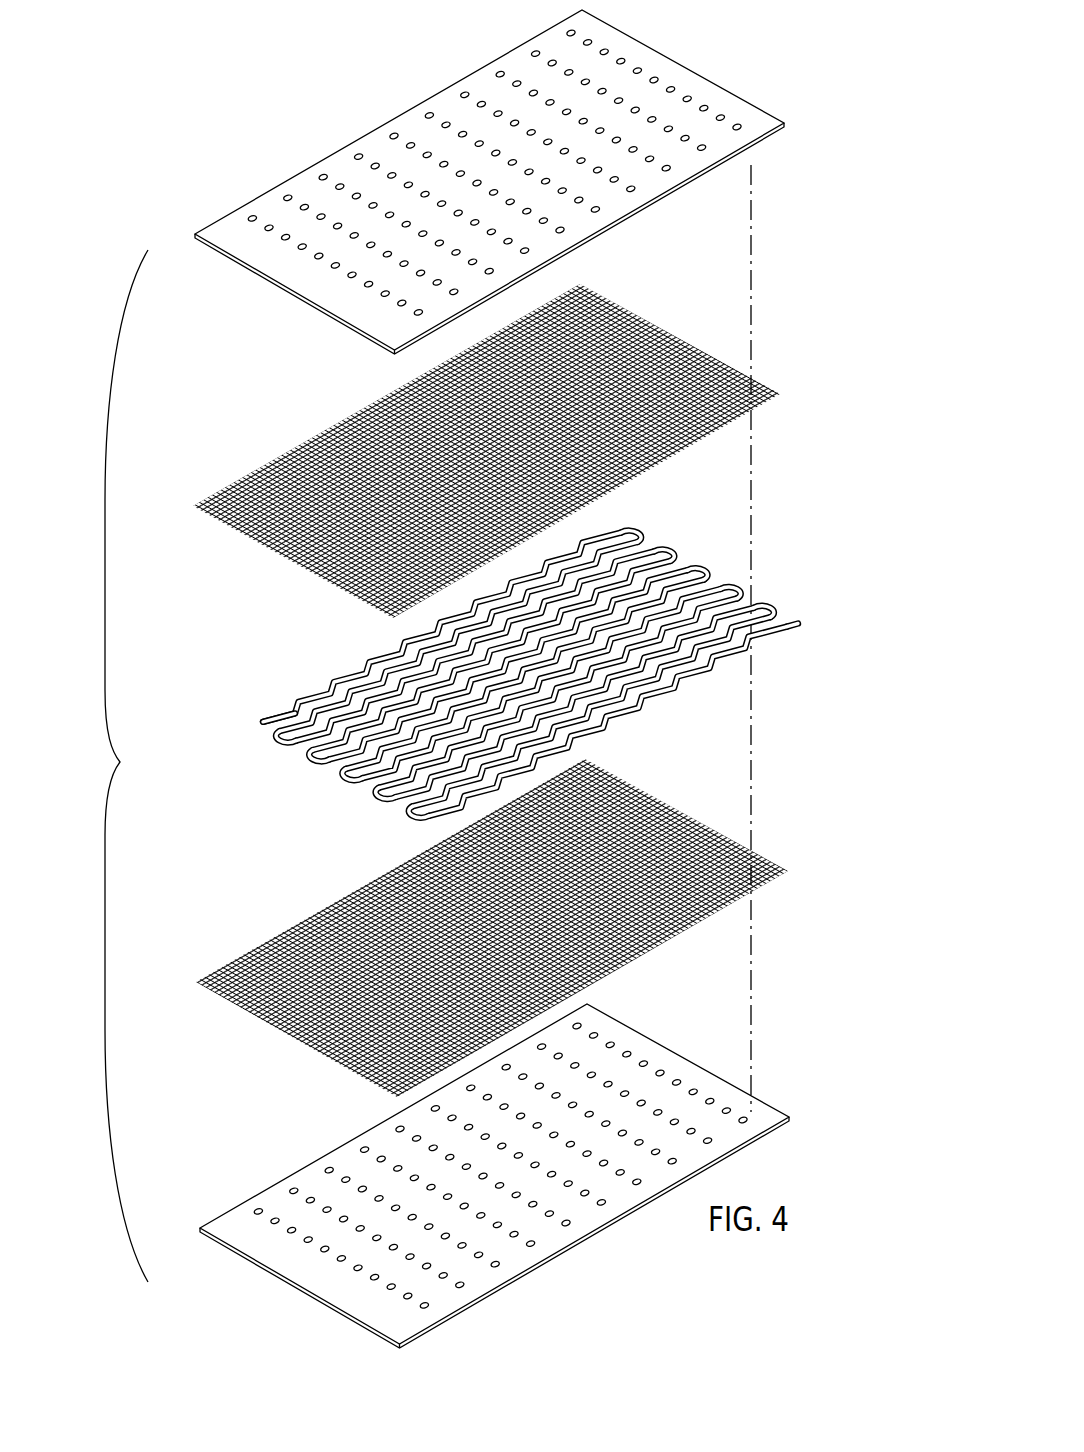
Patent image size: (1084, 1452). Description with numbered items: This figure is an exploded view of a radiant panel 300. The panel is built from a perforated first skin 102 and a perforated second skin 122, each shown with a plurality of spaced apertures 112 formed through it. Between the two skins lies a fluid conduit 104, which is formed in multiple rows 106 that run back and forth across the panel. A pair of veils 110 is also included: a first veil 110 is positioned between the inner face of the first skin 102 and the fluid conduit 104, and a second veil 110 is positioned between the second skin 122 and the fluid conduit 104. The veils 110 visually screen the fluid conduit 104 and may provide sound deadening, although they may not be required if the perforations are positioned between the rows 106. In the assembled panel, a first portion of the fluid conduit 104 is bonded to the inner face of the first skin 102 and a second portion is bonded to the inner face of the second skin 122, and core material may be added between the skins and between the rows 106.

The first skin 102 is at (650, 1032).
The fluid conduit 104 is at (261, 722).
The rows 106 is at (657, 548).
The veil 110 is at (622, 304).
The apertures 112 is at (599, 128).
The second skin 122 is at (705, 76).
The radiant panel 300 is at (114, 766).